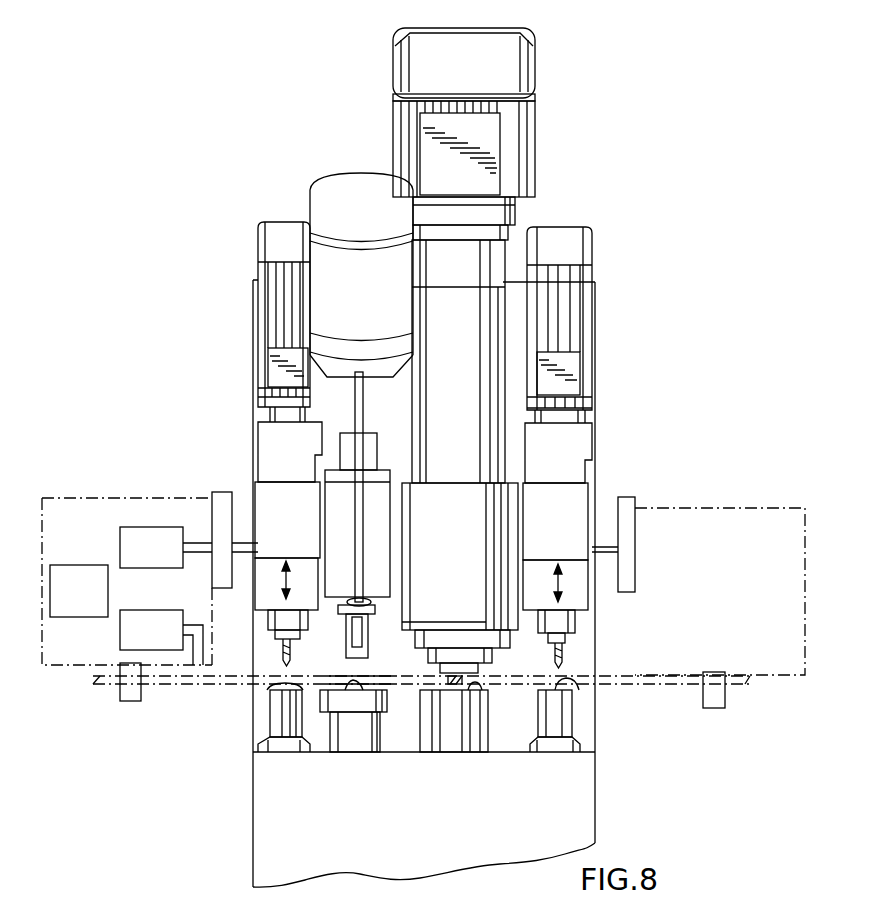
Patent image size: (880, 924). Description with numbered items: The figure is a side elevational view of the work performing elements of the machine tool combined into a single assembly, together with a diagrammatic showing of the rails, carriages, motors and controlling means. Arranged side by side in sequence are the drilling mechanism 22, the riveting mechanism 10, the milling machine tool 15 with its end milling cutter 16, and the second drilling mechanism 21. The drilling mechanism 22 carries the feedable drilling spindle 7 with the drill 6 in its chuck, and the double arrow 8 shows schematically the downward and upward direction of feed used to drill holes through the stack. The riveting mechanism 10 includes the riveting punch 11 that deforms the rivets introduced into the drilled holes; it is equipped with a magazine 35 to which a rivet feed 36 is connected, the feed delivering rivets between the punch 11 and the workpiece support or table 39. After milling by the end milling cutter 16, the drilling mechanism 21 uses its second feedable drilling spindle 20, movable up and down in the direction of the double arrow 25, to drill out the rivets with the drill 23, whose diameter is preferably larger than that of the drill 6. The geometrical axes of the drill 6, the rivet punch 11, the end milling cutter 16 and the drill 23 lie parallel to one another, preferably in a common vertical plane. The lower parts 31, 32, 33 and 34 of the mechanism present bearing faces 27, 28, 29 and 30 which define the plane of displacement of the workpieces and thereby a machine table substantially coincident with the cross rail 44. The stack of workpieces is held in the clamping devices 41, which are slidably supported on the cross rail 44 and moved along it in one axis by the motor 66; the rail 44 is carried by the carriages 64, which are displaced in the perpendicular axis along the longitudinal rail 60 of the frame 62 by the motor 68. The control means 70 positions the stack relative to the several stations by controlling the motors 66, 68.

The drill 6 is at (282, 660).
The feedable drilling spindle 7 is at (282, 640).
The double arrow 8 is at (282, 580).
The riveting mechanism 10 is at (340, 672).
The riveting punch 11 is at (360, 627).
The machine tool 15 is at (497, 675).
The end milling cutter 16 is at (440, 690).
The second feedable drilling spindle 20 is at (560, 631).
The drilling mechanism 21 is at (588, 518).
The drilling mechanism 22 is at (283, 508).
The drill 23 is at (565, 658).
The double arrow 25 is at (563, 583).
The bearing face 27 is at (273, 684).
The bearing face 28 is at (355, 682).
The bearing face 29 is at (478, 687).
The bearing face 30 is at (580, 688).
The lower part 31 is at (282, 713).
The lower part 32 is at (370, 727).
The lower part 33 is at (470, 727).
The lower part 34 is at (566, 718).
The magazine 35 is at (333, 292).
The rivet feed 36 is at (354, 400).
The workpiece support or table 39 is at (368, 705).
The clamping device 41 is at (118, 698).
The cross rail 44 is at (203, 683).
The longitudinal rail 60 is at (214, 492).
The frame 62 is at (255, 322).
The carriage 64 is at (73, 497).
The motor 66 is at (160, 650).
The motor 68 is at (138, 527).
The control means 70 is at (50, 605).